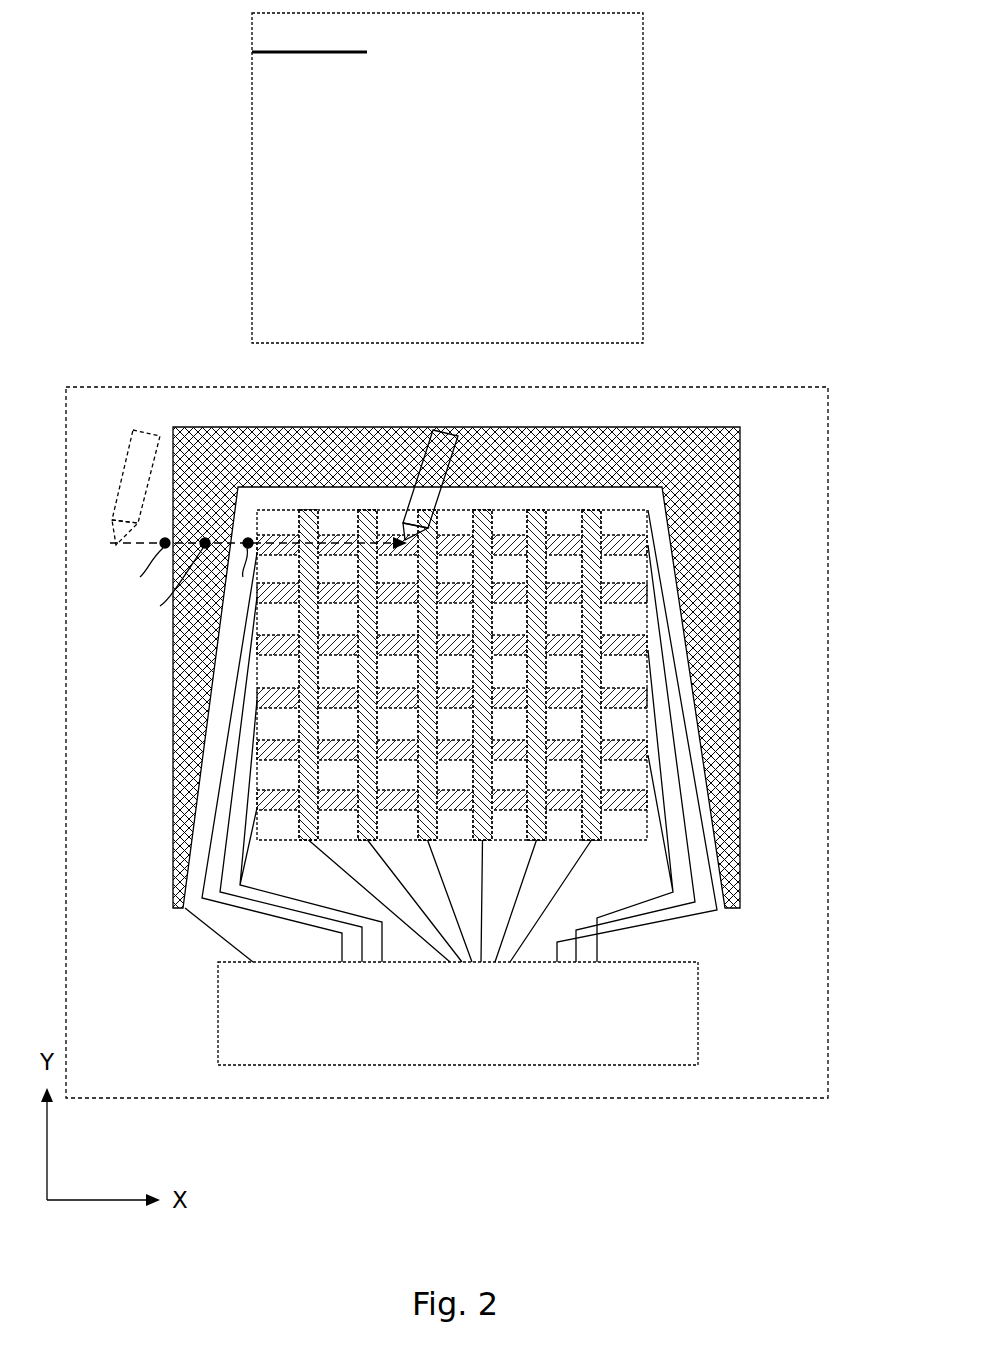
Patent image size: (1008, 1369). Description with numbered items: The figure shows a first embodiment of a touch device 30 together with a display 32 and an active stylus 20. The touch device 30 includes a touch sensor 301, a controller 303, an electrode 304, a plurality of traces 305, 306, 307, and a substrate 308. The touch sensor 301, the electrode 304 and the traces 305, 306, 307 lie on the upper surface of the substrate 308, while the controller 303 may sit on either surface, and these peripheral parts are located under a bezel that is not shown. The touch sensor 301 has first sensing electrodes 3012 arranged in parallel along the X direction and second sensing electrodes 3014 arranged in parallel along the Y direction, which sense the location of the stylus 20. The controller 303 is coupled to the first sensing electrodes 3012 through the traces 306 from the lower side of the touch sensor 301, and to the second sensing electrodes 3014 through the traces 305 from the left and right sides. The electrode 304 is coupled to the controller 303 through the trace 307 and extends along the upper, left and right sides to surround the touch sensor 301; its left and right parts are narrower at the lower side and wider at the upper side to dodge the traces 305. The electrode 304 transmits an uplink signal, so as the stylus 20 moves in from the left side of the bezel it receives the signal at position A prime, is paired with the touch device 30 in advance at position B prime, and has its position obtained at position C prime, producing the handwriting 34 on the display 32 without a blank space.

The active stylus 20 is at (148, 432).
The touch device 30 is at (475, 555).
The display 32 is at (645, 140).
The handwriting 34 is at (345, 65).
The touch sensor 301 is at (536, 619).
The first sensing electrodes 3012 is at (600, 522).
The second sensing electrodes 3014 is at (638, 548).
The controller 303 is at (668, 1027).
The electrode 304 is at (733, 630).
The traces 305 is at (243, 871).
The traces 306 is at (575, 868).
The trace 307 is at (213, 938).
The substrate 308 is at (834, 803).